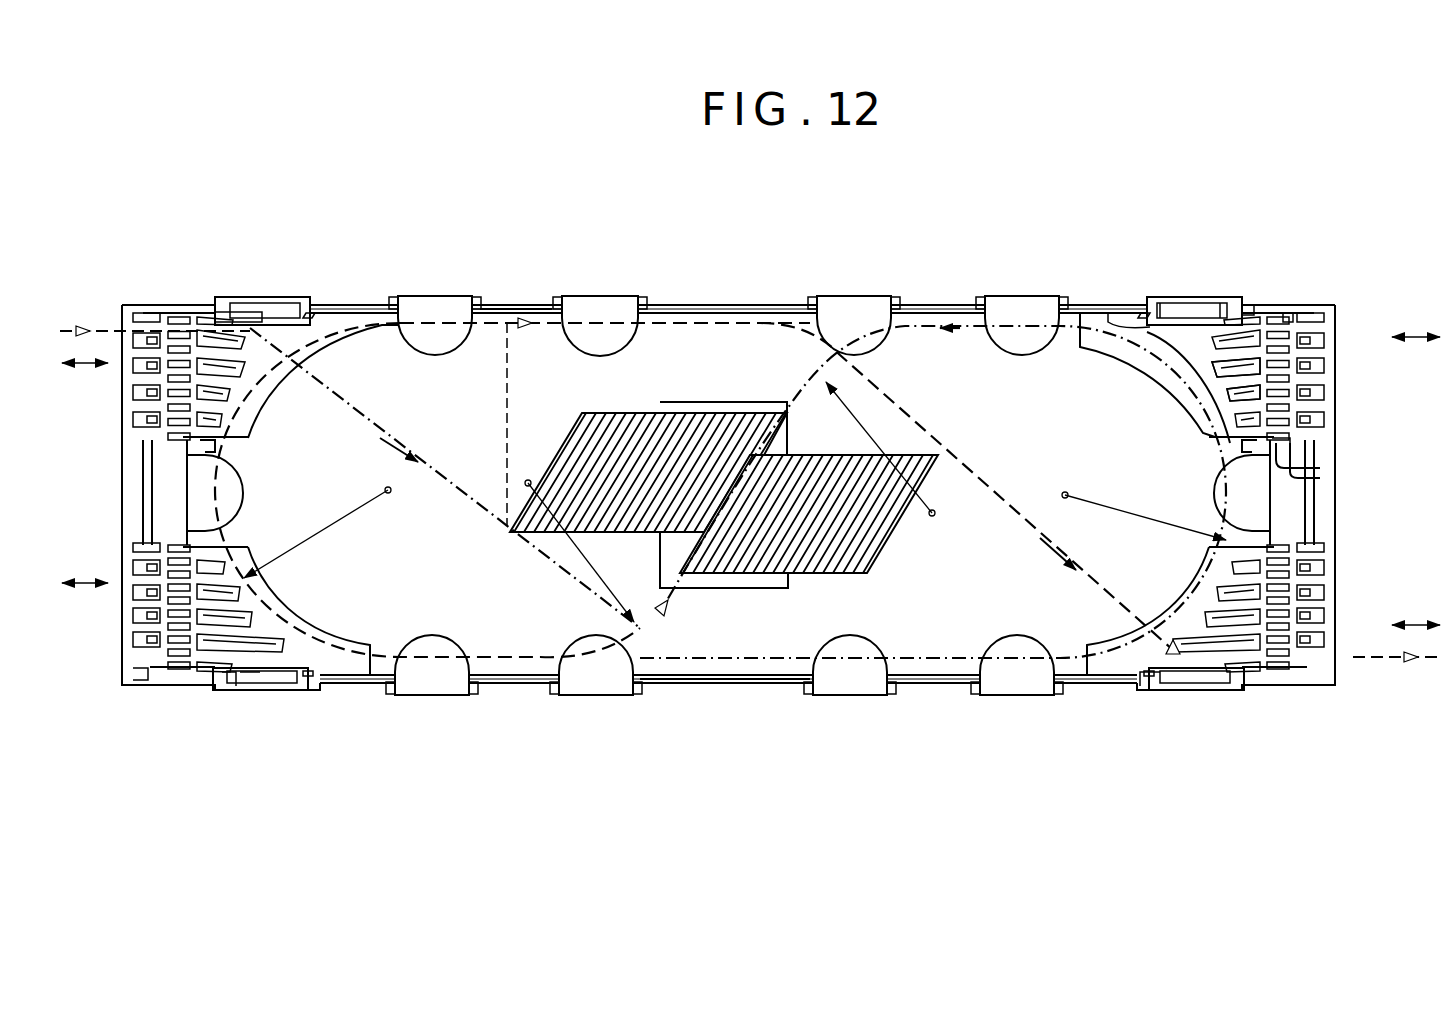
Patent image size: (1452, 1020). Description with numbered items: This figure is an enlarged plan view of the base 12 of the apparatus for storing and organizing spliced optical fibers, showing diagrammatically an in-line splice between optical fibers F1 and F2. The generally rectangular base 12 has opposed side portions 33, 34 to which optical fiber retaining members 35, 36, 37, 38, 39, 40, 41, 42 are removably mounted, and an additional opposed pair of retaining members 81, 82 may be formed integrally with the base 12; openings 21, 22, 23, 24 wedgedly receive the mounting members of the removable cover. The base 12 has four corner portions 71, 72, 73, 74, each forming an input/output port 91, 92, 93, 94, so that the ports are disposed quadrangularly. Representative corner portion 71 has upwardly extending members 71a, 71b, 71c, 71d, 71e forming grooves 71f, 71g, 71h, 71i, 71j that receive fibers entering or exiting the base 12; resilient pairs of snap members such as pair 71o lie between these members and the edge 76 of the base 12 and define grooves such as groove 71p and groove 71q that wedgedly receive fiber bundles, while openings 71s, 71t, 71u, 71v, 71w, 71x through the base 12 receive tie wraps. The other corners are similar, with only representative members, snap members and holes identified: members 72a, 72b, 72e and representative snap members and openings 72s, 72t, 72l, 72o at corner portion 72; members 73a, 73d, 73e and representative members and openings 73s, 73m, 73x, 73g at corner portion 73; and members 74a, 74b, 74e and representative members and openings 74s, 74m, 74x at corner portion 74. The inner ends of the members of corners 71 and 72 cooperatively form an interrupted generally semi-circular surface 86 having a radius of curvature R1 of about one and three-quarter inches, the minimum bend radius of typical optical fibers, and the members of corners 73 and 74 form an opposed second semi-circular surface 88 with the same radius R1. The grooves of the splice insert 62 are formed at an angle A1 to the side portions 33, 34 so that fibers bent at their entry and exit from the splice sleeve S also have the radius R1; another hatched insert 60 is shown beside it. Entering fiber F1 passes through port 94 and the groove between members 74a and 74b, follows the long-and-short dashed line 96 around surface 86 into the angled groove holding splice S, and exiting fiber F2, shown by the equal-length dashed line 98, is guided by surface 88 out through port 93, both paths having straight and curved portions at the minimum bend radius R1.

The base 12 is at (735, 296).
The opening 21 is at (1178, 312).
The opening 22 is at (1138, 673).
The opening 23 is at (278, 676).
The opening 24 is at (257, 312).
The side portion 33 is at (722, 685).
The side portion 34 is at (534, 304).
The optical fiber retaining member 35 is at (440, 302).
The optical fiber retaining member 36 is at (600, 302).
The optical fiber retaining member 37 is at (858, 302).
The optical fiber retaining member 38 is at (1022, 302).
The optical fiber retaining member 39 is at (1015, 688).
The optical fiber retaining member 40 is at (852, 688).
The optical fiber retaining member 41 is at (592, 688).
The optical fiber retaining member 42 is at (434, 688).
The upper hatched plate 60 is at (722, 404).
The splice insert 62 is at (690, 536).
The corner portion 71 is at (1332, 292).
The corner portion 72 is at (1332, 700).
The corner portion 73 is at (127, 702).
The corner portion 74 is at (117, 290).
The edge or end of the base 76 is at (1322, 497).
The optical fiber retaining member 81 is at (240, 494).
The optical fiber retaining member 82 is at (1220, 492).
The interrupted generally semi-circular surface 86 is at (1236, 448).
The interrupted generally semi-circular surface 88 is at (222, 450).
The input/output port 91 is at (1410, 340).
The input/output port 92 is at (1410, 628).
The input/output port 93 is at (84, 588).
The input/output port 94 is at (92, 368).
The dashed line 96 is at (384, 404).
The dashed line 98 is at (1072, 576).
The upwardly extending member 71a is at (1125, 312).
The upwardly extending member 71b is at (1190, 312).
The upwardly extending member 71c is at (1216, 312).
The upwardly extending member 71d is at (1248, 306).
The upwardly extending member 71e is at (1266, 320).
The groove 71f is at (1145, 340).
The groove 71g is at (1168, 372).
The groove 71h is at (1198, 390).
The groove 71i is at (1228, 398).
The groove 71j is at (1240, 434).
The opening or hole 71s is at (1338, 330).
The groove 71p is at (1330, 330).
The opening or hole 71t is at (1325, 340).
The opening or hole 71u is at (1325, 368).
The opening or hole 71v is at (1325, 393).
The opening or hole 71w is at (1325, 418).
The opening or hole 71x is at (1286, 313).
The groove 71q is at (1322, 460).
The pair of upwardly extending snap members 71o is at (1322, 476).
The upwardly extending member 72a is at (1228, 544).
The upwardly extending member 72b is at (1215, 596).
The contact pad 72s is at (1326, 549).
The contact pad 72t is at (1326, 570).
The contact pad 72l is at (1326, 585).
The upwardly extending member 72e is at (1186, 670).
The contact pad 72o is at (1282, 668).
The upwardly extending member 73a is at (225, 560).
The contact pad 73s is at (133, 547).
The contact pad 73m is at (134, 630).
The end tab 73x is at (140, 672).
The upwardly extending member 73e is at (230, 674).
The upwardly extending member 73d is at (252, 676).
The contact finger 73g is at (1222, 580).
The upwardly extending member 74a is at (203, 326).
The upwardly extending member 74b is at (228, 300).
The contact pad 74s is at (124, 308).
The contact pad 74m is at (134, 393).
The upwardly extending member 74e is at (143, 443).
The bus bar 74x is at (130, 440).
The radius of curvature R1 is at (325, 546).
The angle A1 is at (555, 447).
The splice or splice sleeve S is at (752, 578).
The optical fiber F1 is at (74, 330).
The optical fiber F2 is at (1382, 664).